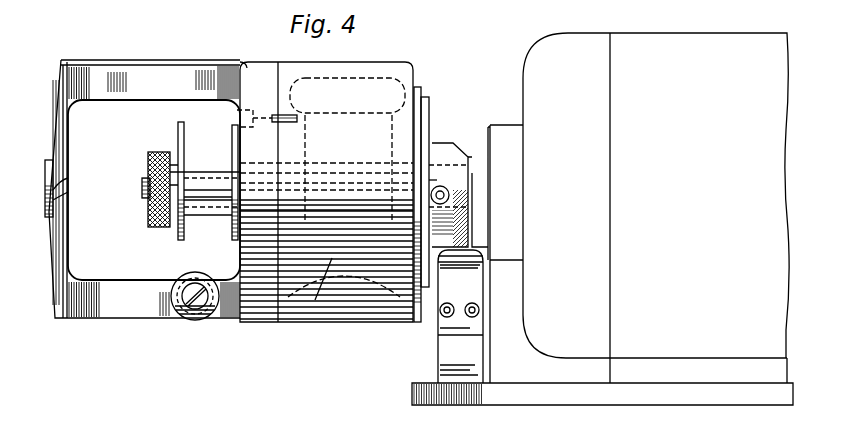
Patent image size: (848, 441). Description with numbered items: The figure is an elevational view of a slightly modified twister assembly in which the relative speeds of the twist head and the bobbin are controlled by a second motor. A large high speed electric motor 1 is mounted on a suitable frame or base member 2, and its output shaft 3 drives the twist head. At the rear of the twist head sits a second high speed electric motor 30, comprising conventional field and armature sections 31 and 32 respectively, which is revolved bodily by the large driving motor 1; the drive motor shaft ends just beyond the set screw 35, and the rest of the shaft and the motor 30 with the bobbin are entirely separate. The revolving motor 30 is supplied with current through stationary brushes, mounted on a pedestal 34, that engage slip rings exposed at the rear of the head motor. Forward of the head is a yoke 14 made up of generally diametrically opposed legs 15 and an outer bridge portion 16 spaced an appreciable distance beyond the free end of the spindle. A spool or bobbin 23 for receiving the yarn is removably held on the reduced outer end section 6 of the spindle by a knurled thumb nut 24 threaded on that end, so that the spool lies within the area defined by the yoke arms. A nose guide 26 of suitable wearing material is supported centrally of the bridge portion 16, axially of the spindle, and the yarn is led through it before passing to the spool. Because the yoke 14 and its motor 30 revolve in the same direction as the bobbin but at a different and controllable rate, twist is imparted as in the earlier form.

The high speed electric motor 1 is at (675, 38).
The frame or base member 2 is at (668, 403).
The output shaft 3 is at (468, 177).
The reduced outer end section 6 is at (147, 182).
The yoke 14 is at (249, 63).
The legs 15 is at (133, 72).
The bridge portion 16 is at (68, 141).
The spool or bobbin 23 is at (186, 148).
The knurled thumb nut 24 is at (160, 152).
The nose guide 26 is at (55, 211).
The second high speed electric motor 30 is at (384, 62).
The field section 31 is at (328, 95).
The armature section 32 is at (308, 322).
The pedestal 34 is at (438, 345).
The set screw 35 is at (438, 185).